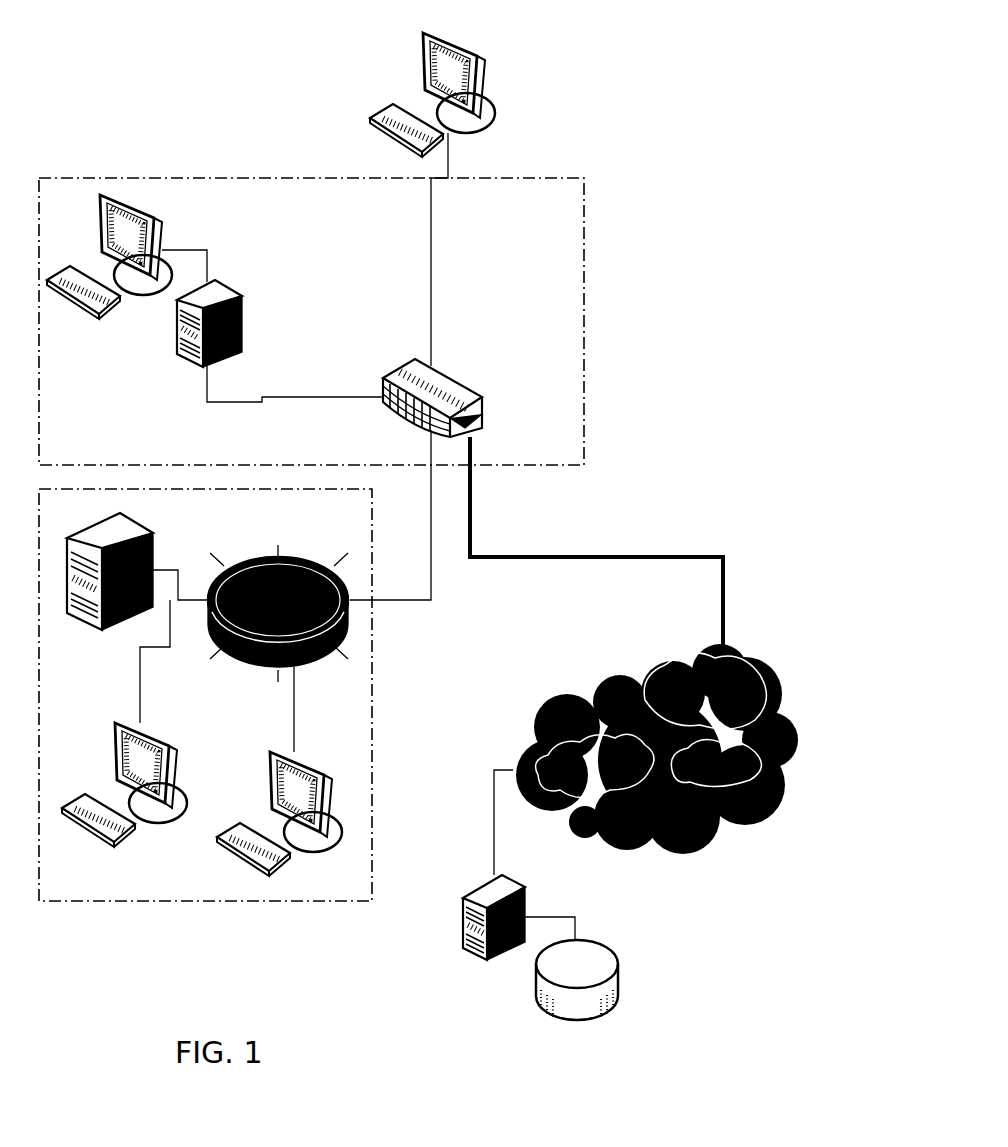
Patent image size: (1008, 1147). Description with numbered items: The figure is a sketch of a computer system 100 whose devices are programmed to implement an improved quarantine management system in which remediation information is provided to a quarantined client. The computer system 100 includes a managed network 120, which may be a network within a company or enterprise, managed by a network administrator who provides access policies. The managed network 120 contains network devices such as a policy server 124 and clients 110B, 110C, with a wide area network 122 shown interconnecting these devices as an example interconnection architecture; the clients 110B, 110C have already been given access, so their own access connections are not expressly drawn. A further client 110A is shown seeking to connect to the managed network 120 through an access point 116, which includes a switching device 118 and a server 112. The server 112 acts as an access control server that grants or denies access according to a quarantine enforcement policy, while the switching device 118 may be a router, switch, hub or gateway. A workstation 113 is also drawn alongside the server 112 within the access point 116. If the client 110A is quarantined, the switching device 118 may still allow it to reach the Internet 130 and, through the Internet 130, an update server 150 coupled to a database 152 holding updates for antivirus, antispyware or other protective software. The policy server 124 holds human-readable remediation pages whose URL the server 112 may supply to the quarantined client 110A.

The computer system 100 is at (612, 270).
The client 110A is at (416, 34).
The client 110B is at (147, 733).
The client 110C is at (324, 772).
The server 112 is at (243, 306).
The computer 113 is at (162, 238).
The access point 116 is at (593, 405).
The switching device 118 is at (433, 376).
The managed network 120 is at (240, 902).
The wide area network 122 is at (293, 568).
The policy server 124 is at (127, 520).
The Internet 130 is at (793, 727).
The update server 150 is at (463, 895).
The database 152 is at (620, 973).